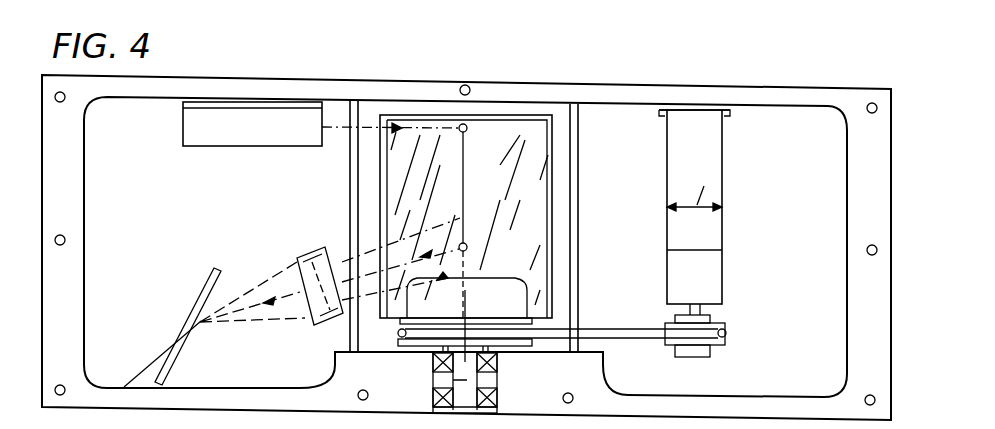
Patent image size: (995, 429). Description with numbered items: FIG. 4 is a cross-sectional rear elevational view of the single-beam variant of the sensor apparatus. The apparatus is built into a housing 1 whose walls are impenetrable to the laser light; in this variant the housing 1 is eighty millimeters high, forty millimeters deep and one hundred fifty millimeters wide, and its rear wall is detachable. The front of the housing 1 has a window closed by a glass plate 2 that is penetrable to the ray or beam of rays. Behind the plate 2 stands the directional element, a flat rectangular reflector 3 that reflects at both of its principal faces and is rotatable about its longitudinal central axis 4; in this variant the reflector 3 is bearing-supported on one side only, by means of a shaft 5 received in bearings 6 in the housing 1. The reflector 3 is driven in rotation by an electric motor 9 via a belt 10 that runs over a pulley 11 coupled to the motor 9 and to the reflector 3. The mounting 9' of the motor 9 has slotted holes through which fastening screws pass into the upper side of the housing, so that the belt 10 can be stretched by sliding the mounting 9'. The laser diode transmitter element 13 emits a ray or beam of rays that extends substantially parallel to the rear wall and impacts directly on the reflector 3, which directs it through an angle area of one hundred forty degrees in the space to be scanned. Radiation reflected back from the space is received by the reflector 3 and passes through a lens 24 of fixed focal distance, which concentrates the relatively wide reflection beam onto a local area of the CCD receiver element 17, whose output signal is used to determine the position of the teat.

The housing 1 is at (577, 78).
The glass plate 2 is at (578, 237).
The reflector 3 is at (528, 192).
The longitudinal central axis 4 is at (462, 192).
The shafts 5 is at (440, 384).
The bearings 6 is at (533, 372).
The electric motor 9 is at (715, 212).
The mounting of motor 9' is at (700, 68).
The belt 10 is at (640, 298).
The pulley 11 is at (718, 323).
The transmitter element 13 is at (264, 137).
The receiver element 17 is at (203, 287).
The lens 24 is at (296, 259).